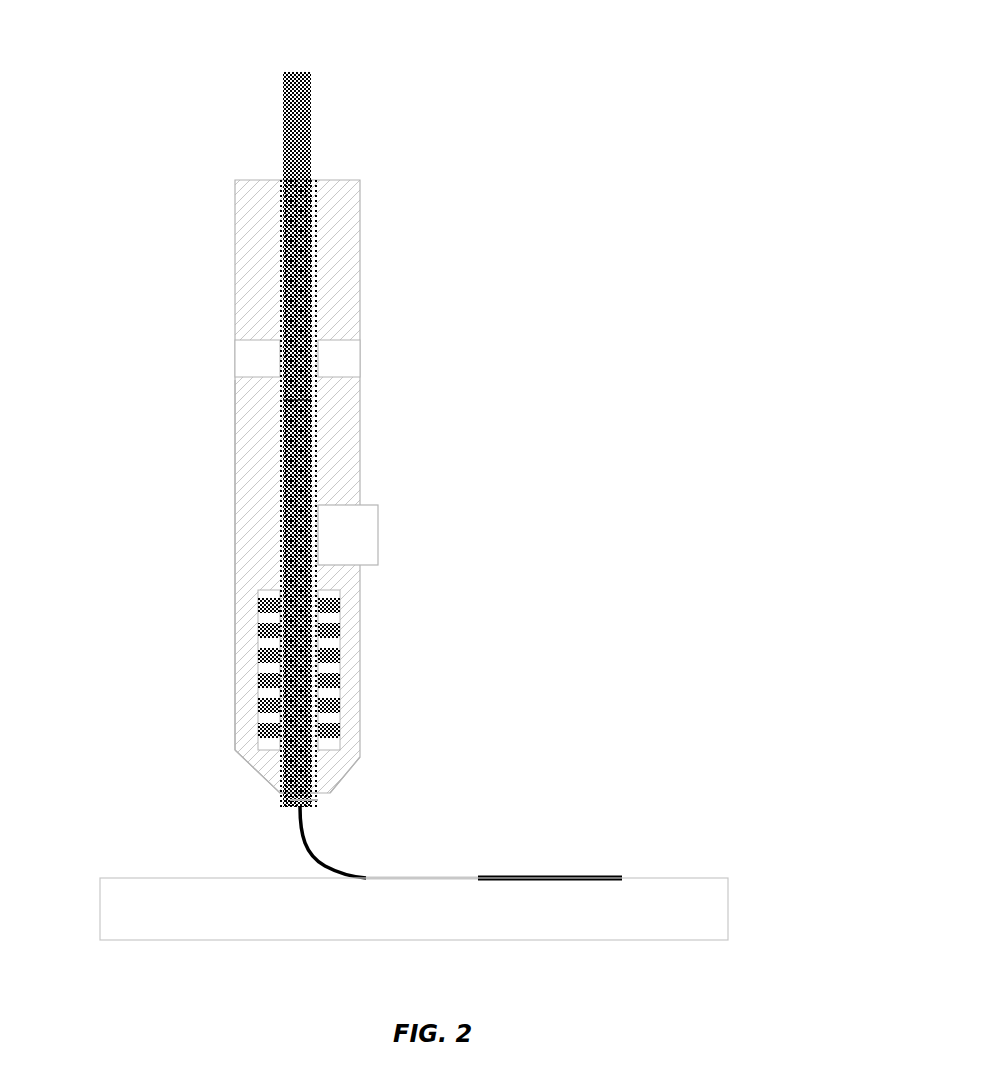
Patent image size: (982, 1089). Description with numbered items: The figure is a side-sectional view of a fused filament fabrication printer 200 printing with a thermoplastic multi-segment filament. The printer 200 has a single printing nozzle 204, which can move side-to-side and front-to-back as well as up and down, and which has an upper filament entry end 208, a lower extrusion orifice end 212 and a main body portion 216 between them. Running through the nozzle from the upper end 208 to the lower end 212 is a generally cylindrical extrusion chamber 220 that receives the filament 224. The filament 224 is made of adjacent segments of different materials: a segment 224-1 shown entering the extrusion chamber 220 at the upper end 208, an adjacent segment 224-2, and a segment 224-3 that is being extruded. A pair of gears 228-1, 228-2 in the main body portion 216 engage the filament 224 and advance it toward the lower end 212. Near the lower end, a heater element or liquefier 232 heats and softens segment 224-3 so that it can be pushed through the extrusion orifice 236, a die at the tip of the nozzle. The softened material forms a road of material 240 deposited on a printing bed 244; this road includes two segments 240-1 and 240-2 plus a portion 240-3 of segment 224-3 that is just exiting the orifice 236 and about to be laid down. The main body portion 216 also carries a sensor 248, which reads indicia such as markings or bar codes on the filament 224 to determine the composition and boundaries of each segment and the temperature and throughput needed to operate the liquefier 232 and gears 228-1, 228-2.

The fused filament fabrication (FFF) printer 200 is at (384, 476).
The printing nozzle 204 is at (280, 410).
The upper filament entry end 208 is at (362, 208).
The lower extrusion orifice end 212 is at (242, 768).
The main body portion 216 is at (234, 497).
The extrusion chamber 220 is at (283, 266).
The filament 224 is at (342, 410).
The filament segment 224-1 is at (312, 150).
The adjacent filament segment 224-2 is at (318, 457).
The filament segment being extruded 224-3 is at (300, 735).
The gear 228-1 is at (232, 355).
The gear 228-2 is at (348, 357).
The heater element (liquefier) 232 is at (252, 660).
The extrusion orifice (die) 236 is at (322, 805).
The road of material 240 is at (375, 801).
The road segment 240-1 is at (535, 875).
The road segment 240-2 is at (365, 875).
The exiting portion of segment 240-3 is at (290, 808).
The printing bed 244 is at (160, 875).
The sensor 248 is at (380, 535).